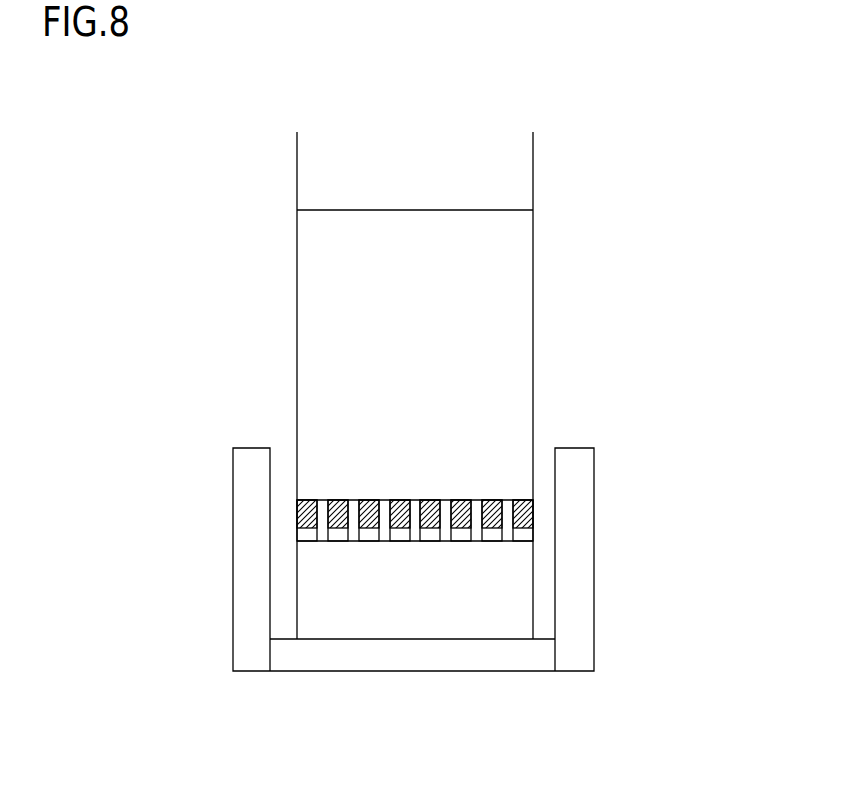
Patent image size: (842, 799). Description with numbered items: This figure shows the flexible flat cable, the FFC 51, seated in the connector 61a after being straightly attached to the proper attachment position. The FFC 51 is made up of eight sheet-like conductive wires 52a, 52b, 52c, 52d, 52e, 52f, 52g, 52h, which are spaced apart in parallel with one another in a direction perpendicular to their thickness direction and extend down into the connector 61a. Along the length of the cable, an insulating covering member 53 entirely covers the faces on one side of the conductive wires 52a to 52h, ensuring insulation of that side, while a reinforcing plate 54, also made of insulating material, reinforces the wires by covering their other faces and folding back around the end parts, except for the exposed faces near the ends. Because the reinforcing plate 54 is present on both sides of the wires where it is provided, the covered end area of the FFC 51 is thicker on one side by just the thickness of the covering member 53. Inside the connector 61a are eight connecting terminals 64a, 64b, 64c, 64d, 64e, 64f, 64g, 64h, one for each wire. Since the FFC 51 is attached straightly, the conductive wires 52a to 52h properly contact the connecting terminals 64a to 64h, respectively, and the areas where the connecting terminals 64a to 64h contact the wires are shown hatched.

The FFC 51 is at (641, 225).
The conductive wire 52a is at (306, 530).
The conductive wire 52b is at (337, 530).
The conductive wire 52c is at (368, 530).
The conductive wire 52d is at (399, 530).
The conductive wire 52e is at (429, 530).
The conductive wire 52f is at (460, 530).
The conductive wire 52g is at (491, 530).
The conductive wire 52h is at (522, 530).
The insulating covering member 53 is at (478, 174).
The reinforcing plate 54 is at (478, 244).
The connector 61a is at (580, 561).
The connecting terminal 64a is at (306, 499).
The connecting terminal 64b is at (337, 499).
The connecting terminal 64c is at (368, 499).
The connecting terminal 64d is at (399, 499).
The connecting terminal 64e is at (430, 499).
The connecting terminal 64f is at (461, 499).
The connecting terminal 64g is at (492, 499).
The connecting terminal 64h is at (522, 499).